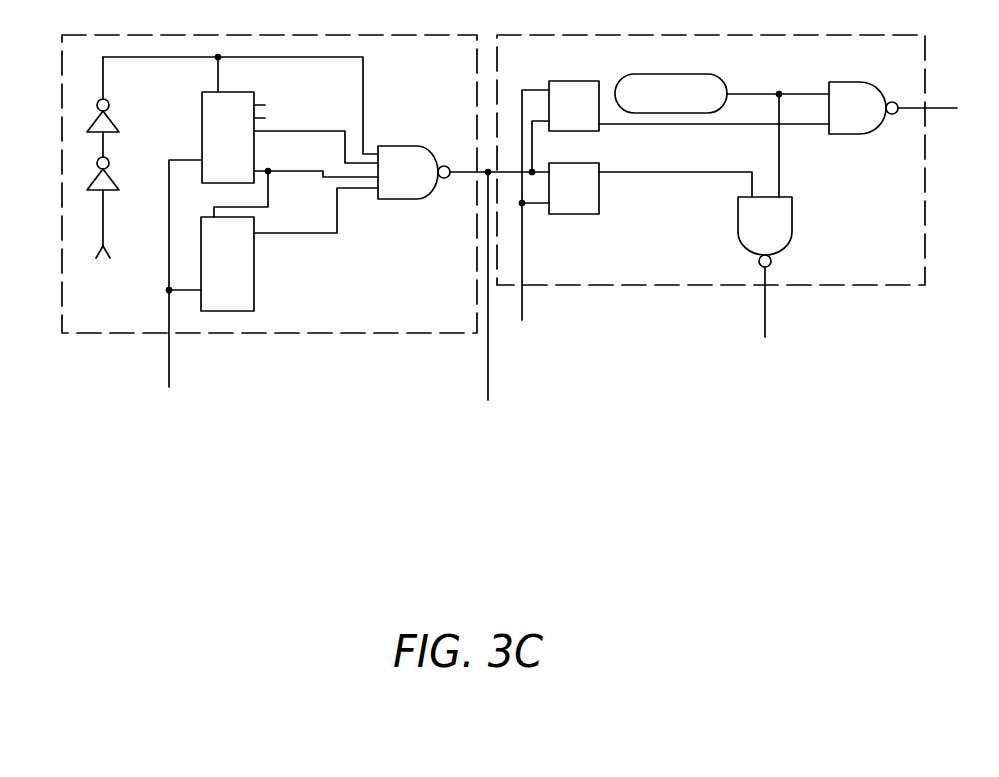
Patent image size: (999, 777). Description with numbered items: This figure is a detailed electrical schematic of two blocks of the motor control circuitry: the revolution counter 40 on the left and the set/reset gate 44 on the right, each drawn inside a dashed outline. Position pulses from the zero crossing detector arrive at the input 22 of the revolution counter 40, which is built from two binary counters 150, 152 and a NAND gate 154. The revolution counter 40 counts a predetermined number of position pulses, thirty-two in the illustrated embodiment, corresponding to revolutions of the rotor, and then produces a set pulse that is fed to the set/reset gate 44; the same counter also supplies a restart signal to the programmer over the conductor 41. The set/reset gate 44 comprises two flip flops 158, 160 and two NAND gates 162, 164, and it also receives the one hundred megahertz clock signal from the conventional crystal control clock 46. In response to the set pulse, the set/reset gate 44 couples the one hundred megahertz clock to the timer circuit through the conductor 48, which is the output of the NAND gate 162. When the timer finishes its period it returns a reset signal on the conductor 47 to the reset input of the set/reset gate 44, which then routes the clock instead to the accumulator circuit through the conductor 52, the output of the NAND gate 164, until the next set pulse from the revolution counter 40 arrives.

The input 22 is at (103, 226).
The revolution counter 40 is at (368, 299).
The conductor 41 is at (488, 330).
The set/reset gate 44 is at (823, 235).
The crystal control clock 46 is at (693, 72).
The conductor 47 is at (522, 303).
The conductor 48 is at (765, 303).
The conductor 52 is at (937, 108).
The binary counter 150 is at (233, 137).
The binary counter 152 is at (227, 264).
The NAND gate 154 is at (414, 172).
The flip flop 158 is at (574, 106).
The flip flop 160 is at (574, 188).
The NAND gate 162 is at (765, 232).
The NAND gate 164 is at (862, 108).